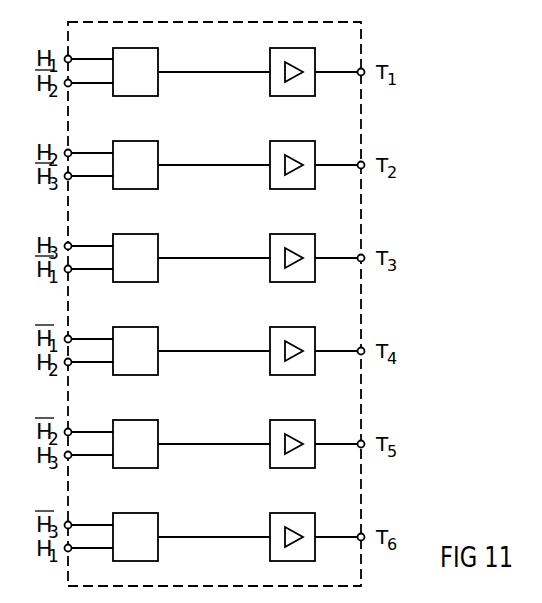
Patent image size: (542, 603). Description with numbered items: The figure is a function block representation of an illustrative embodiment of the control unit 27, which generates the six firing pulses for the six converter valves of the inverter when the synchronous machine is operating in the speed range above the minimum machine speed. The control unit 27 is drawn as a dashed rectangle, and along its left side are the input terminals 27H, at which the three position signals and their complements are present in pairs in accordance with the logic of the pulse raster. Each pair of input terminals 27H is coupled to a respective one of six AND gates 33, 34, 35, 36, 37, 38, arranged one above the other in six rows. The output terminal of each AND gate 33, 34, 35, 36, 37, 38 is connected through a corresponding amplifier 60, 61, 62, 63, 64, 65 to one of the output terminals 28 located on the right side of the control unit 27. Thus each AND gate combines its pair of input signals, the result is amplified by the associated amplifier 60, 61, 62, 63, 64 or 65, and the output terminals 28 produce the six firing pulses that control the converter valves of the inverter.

The control unit 27 is at (342, 566).
The input terminals 27H is at (84, 47).
The output terminals 28 is at (358, 75).
The AND gate 33 is at (158, 52).
The AND gate 34 is at (147, 142).
The AND gate 35 is at (147, 234).
The AND gate 36 is at (146, 327).
The AND gate 37 is at (146, 420).
The AND gate 38 is at (147, 513).
The amplifier 60 is at (310, 49).
The amplifier 61 is at (305, 141).
The amplifier 62 is at (292, 222).
The amplifier 63 is at (284, 327).
The amplifier 64 is at (285, 420).
The amplifier 65 is at (284, 513).